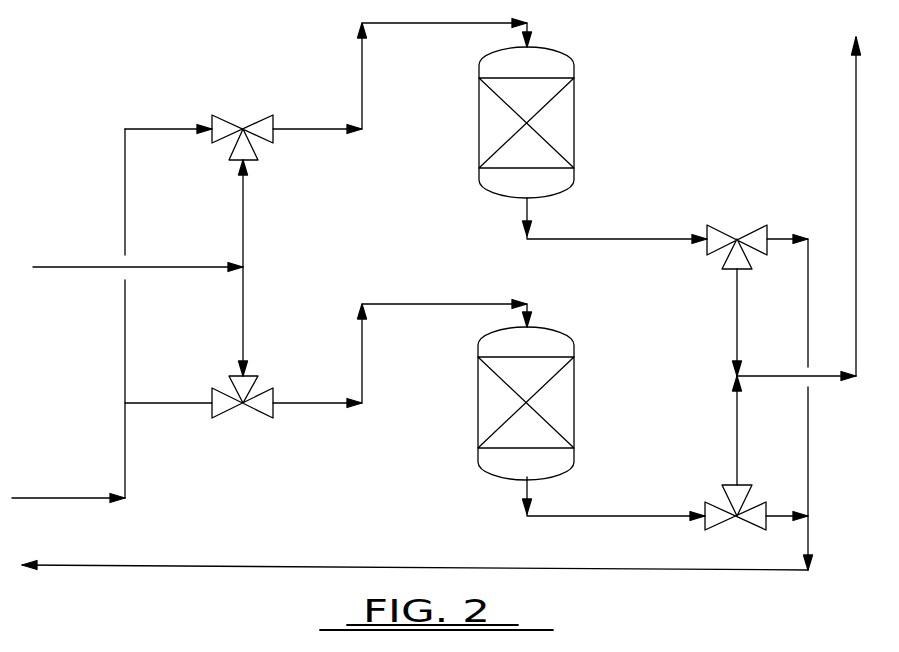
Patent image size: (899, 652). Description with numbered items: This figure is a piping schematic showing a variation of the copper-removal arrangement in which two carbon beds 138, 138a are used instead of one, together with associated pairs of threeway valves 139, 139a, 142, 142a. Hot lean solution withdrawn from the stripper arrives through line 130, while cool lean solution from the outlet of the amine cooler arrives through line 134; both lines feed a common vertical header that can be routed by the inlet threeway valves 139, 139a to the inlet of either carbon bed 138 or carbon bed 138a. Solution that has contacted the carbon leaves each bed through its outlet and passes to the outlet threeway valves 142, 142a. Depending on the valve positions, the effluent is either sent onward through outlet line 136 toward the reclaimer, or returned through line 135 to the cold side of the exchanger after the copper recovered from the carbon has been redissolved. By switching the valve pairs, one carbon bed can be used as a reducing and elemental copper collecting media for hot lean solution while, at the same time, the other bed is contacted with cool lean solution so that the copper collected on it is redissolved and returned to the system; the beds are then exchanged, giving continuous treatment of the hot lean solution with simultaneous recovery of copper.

The line 130 is at (98, 267).
The line 134 is at (125, 482).
The line 135 is at (247, 566).
The outlet line 136 is at (856, 172).
The carbon bed 138 is at (574, 95).
The carbon bed 138a is at (574, 385).
The threeway valve 139 is at (262, 118).
The threeway valve 139a is at (263, 393).
The threeway valve 142 is at (727, 226).
The threeway valve 142a is at (724, 501).